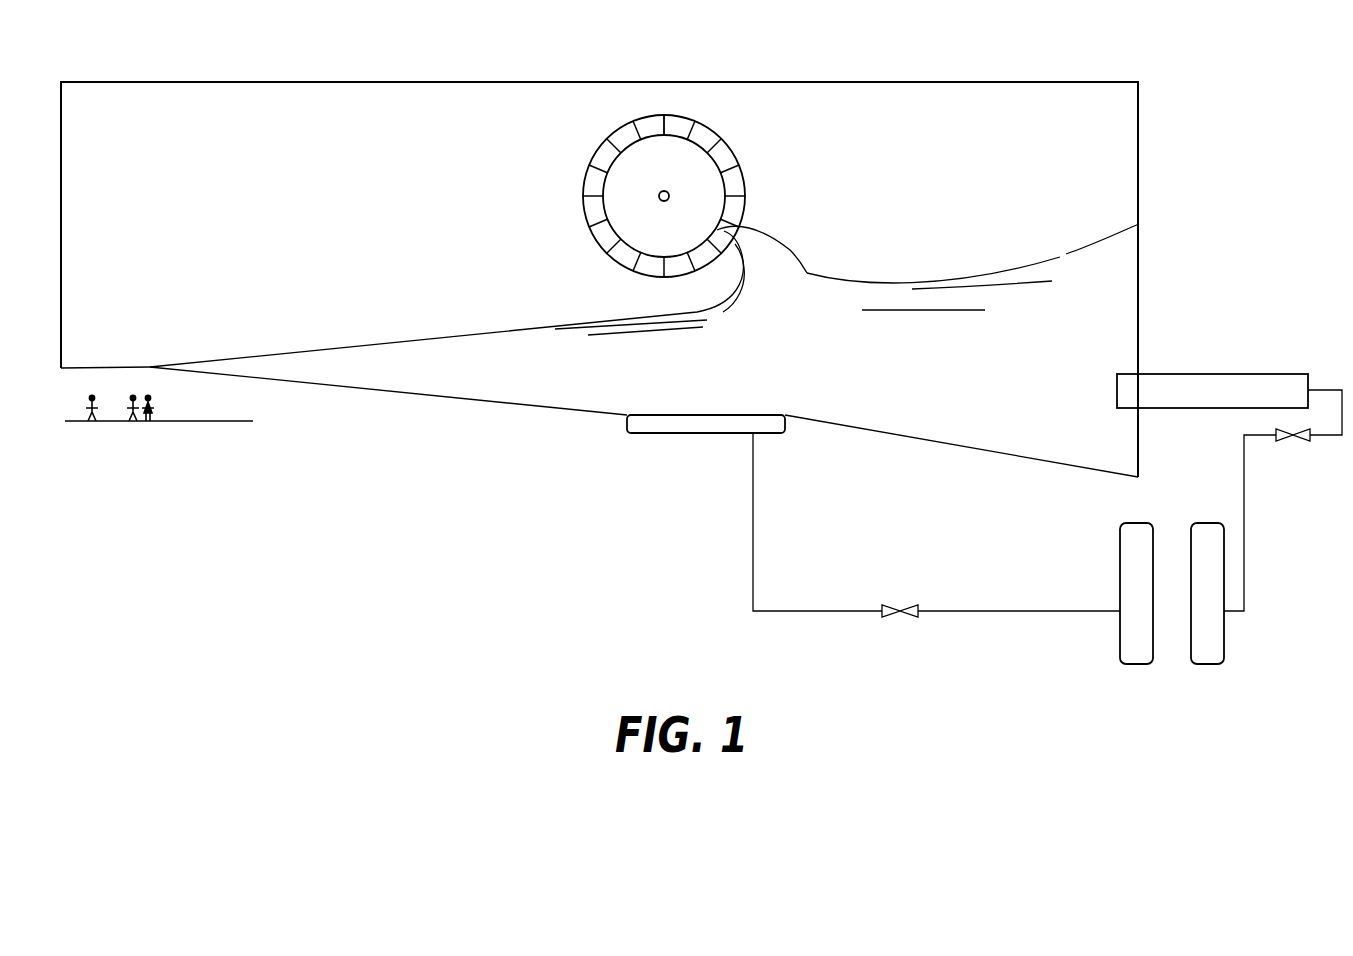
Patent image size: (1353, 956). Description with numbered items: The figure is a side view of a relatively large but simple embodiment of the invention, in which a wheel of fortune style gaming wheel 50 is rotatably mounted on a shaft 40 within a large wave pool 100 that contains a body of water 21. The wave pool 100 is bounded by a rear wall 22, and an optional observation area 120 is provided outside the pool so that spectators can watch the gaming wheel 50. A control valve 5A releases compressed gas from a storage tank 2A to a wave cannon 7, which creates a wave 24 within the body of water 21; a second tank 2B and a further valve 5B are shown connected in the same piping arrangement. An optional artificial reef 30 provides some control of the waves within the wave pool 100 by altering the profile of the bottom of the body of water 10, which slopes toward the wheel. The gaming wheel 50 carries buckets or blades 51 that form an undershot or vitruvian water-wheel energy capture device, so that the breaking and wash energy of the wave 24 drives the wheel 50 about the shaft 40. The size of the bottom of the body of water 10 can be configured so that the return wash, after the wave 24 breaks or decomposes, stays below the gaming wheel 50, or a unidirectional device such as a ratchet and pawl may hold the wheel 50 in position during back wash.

The wave pool 100 is at (307, 82).
The rear wall 22 is at (1138, 155).
The bottom of the body of water 10 is at (982, 450).
The wave 24 is at (758, 232).
The body of water 21 is at (1063, 339).
The gaming wheel 50 is at (720, 134).
The wheel bucket / blade 51 is at (645, 122).
The shaft 40 is at (659, 196).
The artificial reef 30 is at (665, 434).
The valve 5B is at (920, 603).
The tank 2B is at (1117, 656).
The storage tank 2A is at (1224, 657).
The control valve 5A is at (1313, 442).
The wave cannon 7 is at (1177, 374).
The observation area 120 is at (112, 428).